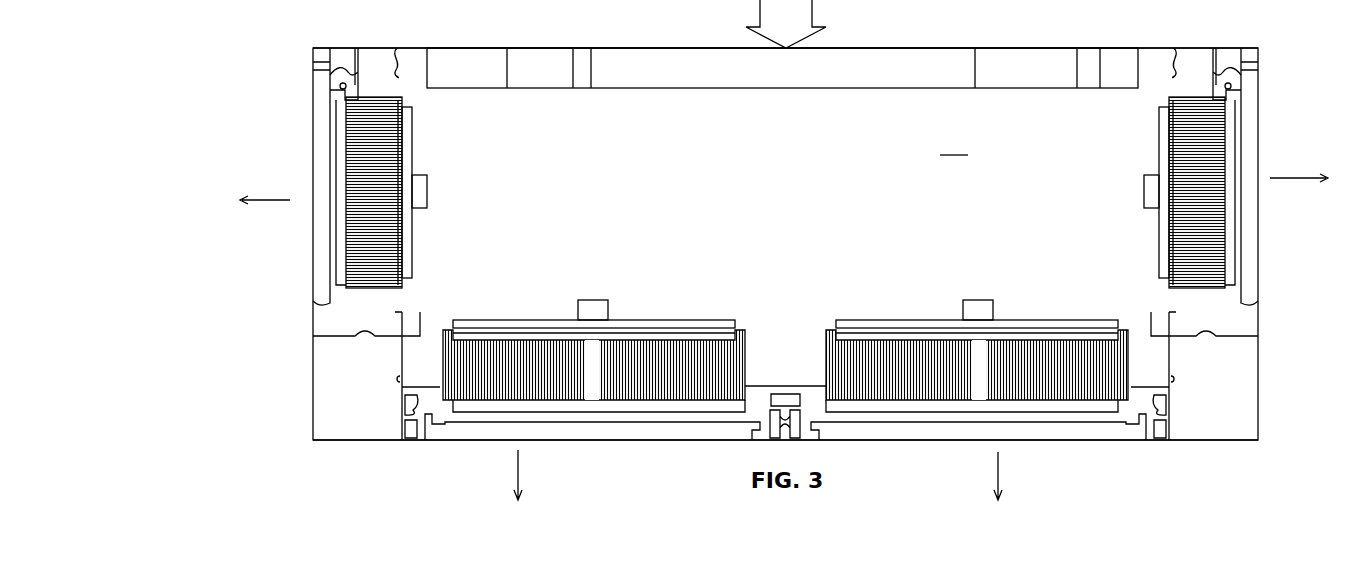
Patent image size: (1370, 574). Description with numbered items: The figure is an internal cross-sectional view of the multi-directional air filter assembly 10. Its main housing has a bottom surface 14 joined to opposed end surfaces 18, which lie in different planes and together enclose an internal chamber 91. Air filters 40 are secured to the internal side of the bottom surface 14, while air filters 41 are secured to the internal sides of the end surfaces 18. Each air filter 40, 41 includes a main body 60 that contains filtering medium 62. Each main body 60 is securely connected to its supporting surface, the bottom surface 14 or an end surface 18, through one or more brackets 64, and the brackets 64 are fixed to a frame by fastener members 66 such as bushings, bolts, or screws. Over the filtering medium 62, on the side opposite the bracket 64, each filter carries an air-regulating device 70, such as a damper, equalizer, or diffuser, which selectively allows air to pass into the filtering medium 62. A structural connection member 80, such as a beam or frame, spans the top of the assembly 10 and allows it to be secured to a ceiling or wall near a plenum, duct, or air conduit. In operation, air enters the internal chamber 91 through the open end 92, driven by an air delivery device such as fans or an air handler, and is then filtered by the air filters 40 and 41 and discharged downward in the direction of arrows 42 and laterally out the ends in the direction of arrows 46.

The multi-directional air filter assembly 10 is at (299, 42).
The bottom surface 14 is at (350, 443).
The end surfaces 18 is at (313, 385).
The air filters 40 is at (748, 352).
The air filters 41 is at (350, 146).
The arrows 42 is at (530, 480).
The arrows 46 is at (263, 198).
The main body 60 is at (397, 260).
The filtering medium 62 is at (395, 240).
The brackets 64 is at (330, 220).
The fastener members 66 is at (320, 76).
The air-regulating device 70 is at (413, 138).
The structural connection member 80 is at (785, 90).
The internal chamber 91 is at (954, 144).
The open end 92 is at (1030, 48).